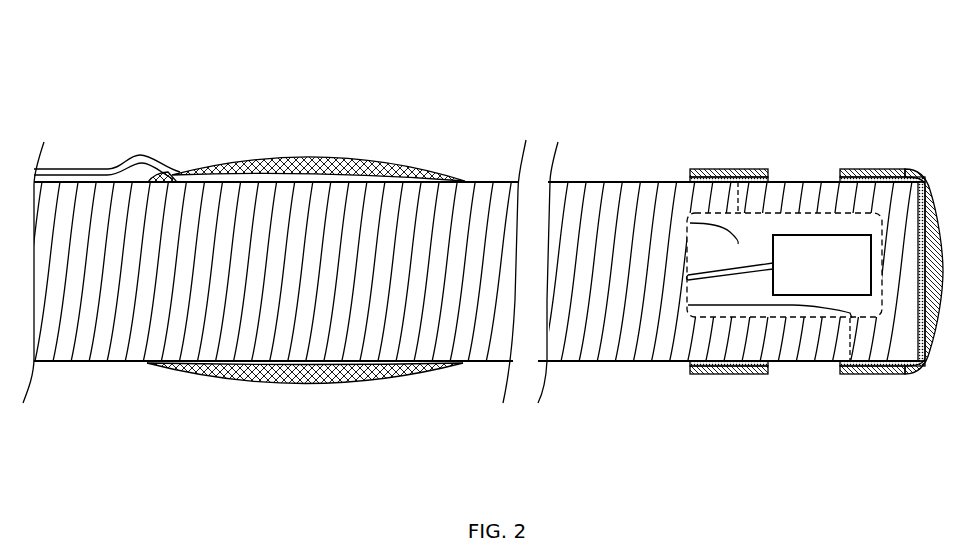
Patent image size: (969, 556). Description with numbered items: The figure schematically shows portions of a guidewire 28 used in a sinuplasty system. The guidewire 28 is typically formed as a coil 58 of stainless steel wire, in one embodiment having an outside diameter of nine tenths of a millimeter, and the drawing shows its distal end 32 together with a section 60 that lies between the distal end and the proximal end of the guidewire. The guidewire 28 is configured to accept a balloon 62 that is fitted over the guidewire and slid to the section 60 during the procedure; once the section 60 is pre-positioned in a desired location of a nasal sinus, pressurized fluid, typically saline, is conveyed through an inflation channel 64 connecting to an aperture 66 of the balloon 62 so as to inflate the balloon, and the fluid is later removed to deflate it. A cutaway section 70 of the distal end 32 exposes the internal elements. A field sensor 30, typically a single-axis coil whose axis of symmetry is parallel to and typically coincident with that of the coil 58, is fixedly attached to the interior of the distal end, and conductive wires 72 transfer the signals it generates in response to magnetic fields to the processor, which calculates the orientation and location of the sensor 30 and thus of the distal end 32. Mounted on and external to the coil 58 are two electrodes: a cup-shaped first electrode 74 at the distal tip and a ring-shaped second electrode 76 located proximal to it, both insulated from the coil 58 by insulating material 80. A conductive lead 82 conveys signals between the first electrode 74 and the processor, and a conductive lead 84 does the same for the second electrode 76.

The guidewire 28 is at (490, 182).
The field sensor 30 is at (807, 235).
The distal end 32 is at (612, 182).
The coil 58 is at (70, 362).
The section 60 is at (497, 362).
The balloon 62 is at (372, 160).
The inflation channel 64 is at (108, 168).
The aperture 66 is at (175, 172).
The cutaway section 70 is at (806, 318).
The conductive wires 72 is at (702, 278).
The first electrode 74 is at (897, 168).
The second electrode 76 is at (748, 168).
The insulating material 80 is at (690, 178).
The conductive lead 82 is at (737, 305).
The conductive lead 84 is at (740, 244).